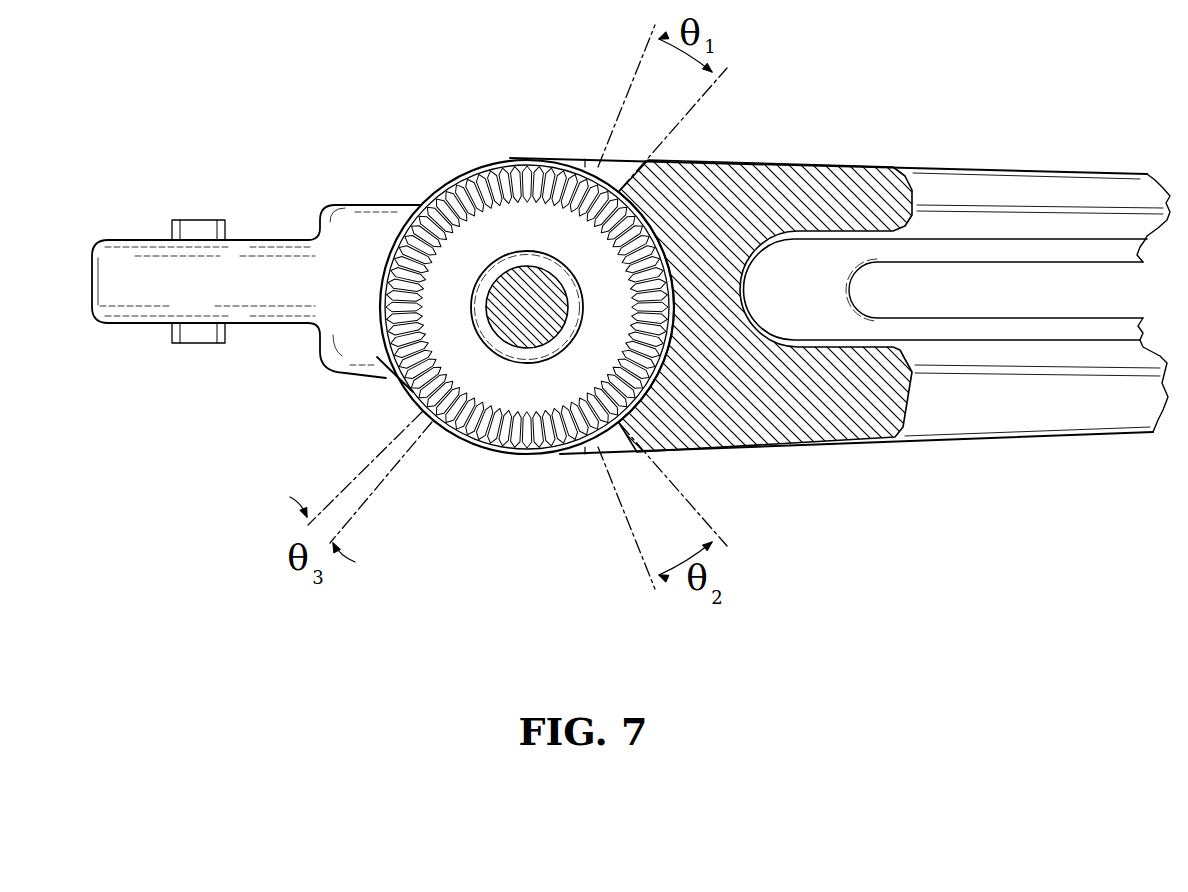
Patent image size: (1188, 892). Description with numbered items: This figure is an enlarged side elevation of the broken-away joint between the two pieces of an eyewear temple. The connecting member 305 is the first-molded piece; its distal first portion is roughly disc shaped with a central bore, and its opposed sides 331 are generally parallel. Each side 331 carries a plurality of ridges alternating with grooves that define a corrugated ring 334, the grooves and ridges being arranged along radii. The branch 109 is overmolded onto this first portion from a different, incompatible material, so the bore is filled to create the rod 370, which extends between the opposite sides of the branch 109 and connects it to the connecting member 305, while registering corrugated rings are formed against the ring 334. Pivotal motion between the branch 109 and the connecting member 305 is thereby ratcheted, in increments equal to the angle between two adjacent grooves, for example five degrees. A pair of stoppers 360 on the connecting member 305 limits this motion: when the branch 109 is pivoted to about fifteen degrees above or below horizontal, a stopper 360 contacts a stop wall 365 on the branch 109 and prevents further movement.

The branch 109 is at (1080, 190).
The connecting member 305 is at (258, 236).
The opposed sides 331 is at (468, 245).
The corrugated ring 334 is at (485, 177).
The stoppers 360 is at (598, 160).
The stop wall 365 is at (632, 185).
The rod 370 is at (515, 320).